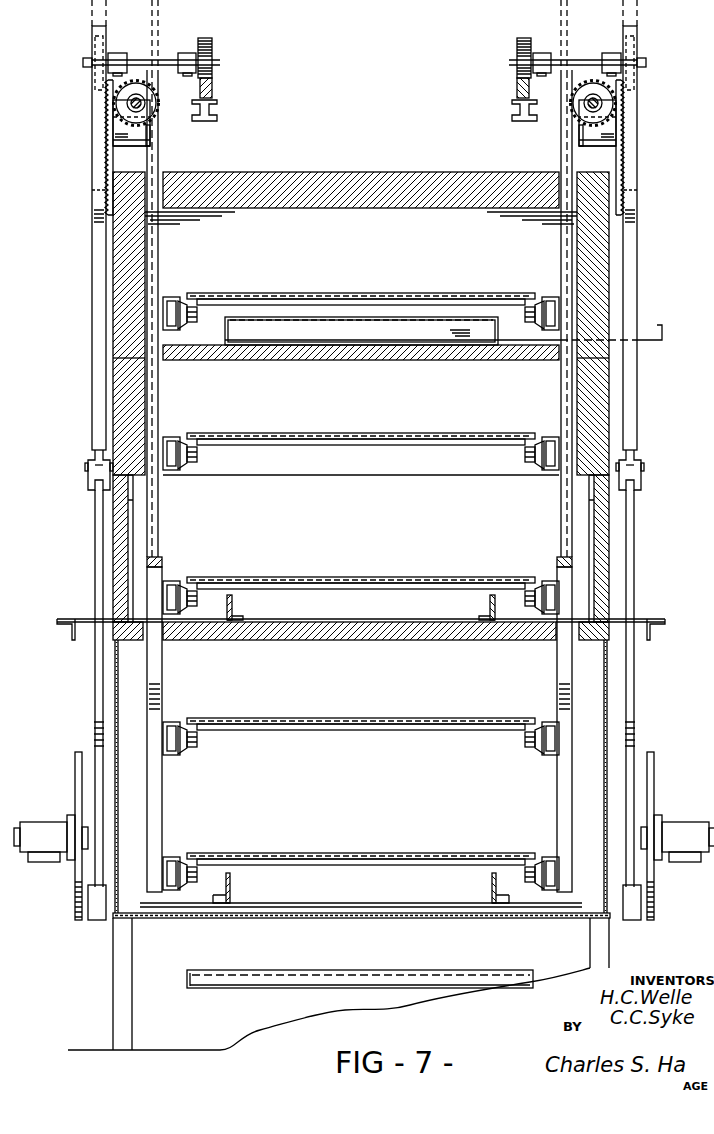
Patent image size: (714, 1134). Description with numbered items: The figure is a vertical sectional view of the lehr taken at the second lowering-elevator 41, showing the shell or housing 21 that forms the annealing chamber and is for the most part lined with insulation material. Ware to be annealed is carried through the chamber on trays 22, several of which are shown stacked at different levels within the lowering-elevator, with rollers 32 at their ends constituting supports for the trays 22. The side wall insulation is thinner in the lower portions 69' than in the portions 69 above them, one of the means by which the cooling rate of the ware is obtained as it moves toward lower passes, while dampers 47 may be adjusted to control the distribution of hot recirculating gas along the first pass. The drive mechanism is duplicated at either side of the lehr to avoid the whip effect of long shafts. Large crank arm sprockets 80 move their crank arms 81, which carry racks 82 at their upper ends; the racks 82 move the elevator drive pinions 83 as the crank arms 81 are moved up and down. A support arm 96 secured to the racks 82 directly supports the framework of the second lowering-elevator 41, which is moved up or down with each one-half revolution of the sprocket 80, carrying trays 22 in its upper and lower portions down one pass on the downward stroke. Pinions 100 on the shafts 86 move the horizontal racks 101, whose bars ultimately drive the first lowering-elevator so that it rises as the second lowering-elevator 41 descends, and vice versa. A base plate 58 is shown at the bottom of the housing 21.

The shell or housing 21 is at (608, 680).
The trays 22 is at (357, 297).
The rollers 32 is at (187, 745).
The second lowering-elevator 41 is at (162, 668).
The dampers 47 is at (345, 330).
The base plate 58 is at (320, 918).
The insulation portions 69 is at (364, 323).
The insulation portions 69' is at (362, 557).
The crank arm sprockets 80 is at (75, 772).
The crank arms 81 is at (95, 532).
The racks 82 is at (110, 133).
The elevator drive pinions 83 is at (150, 105).
The shafts 86 is at (165, 60).
The support arm 96 is at (118, 147).
The pinions 100 is at (212, 92).
The horizontal racks 101 is at (207, 40).